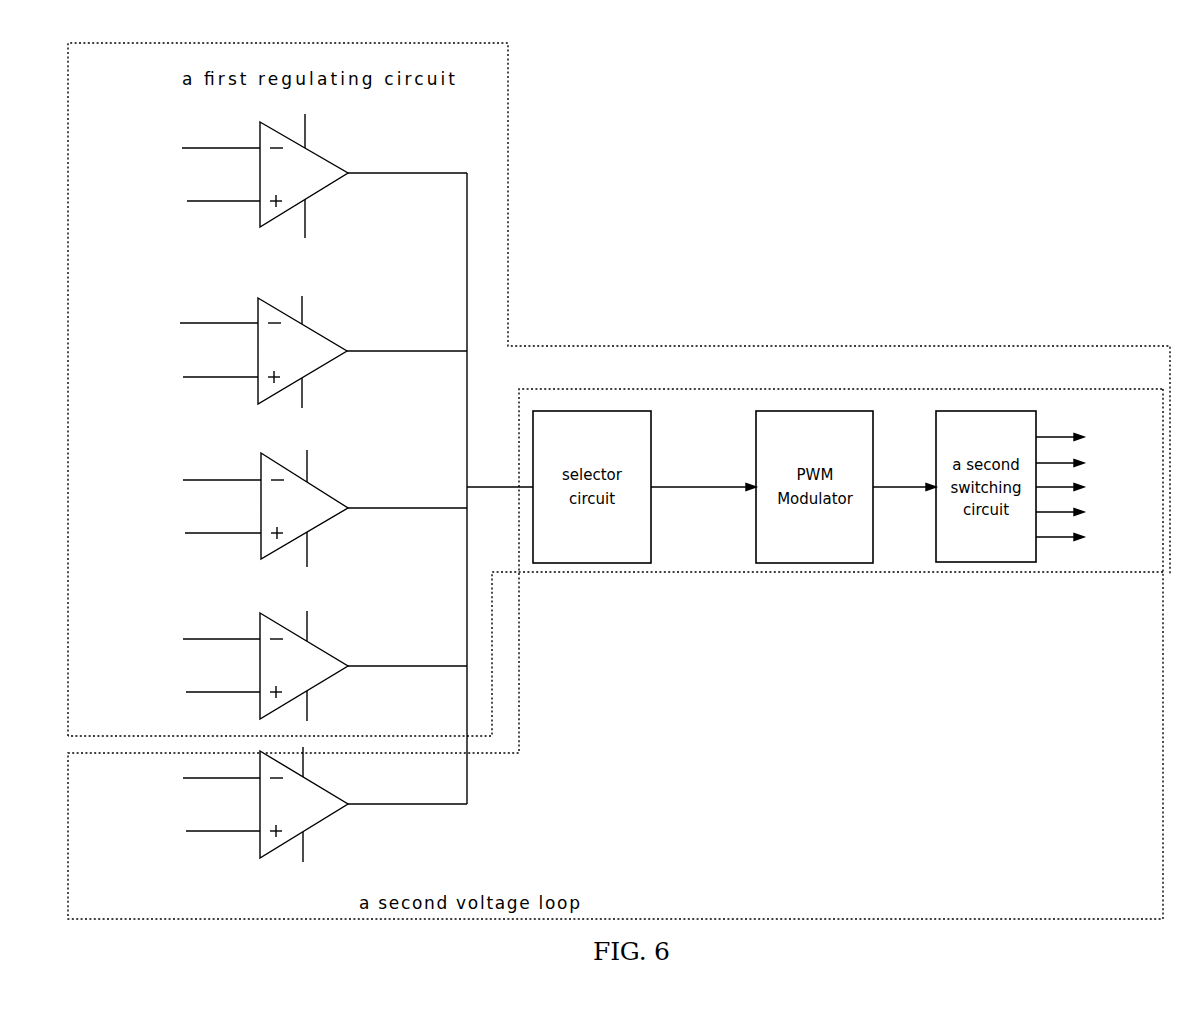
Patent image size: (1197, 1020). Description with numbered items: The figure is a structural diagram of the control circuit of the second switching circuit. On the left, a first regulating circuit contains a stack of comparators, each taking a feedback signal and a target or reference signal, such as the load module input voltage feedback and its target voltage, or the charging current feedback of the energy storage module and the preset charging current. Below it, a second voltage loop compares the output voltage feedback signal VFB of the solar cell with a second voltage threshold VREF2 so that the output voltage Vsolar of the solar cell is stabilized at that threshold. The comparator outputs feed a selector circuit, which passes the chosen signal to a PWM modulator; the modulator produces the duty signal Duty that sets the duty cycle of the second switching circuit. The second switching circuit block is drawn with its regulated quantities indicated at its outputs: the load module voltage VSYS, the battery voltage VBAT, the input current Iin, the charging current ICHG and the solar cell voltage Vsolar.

The duty signal Duty is at (904, 473).
The second voltage threshold VREF2 is at (181, 778).
The output voltage feedback signal of the solar cell VFB is at (188, 831).
The system voltage output VSYS is at (1091, 440).
The battery voltage output VBAT is at (1092, 466).
The input current output Iin is at (1089, 490).
The charging current output ICHG is at (1094, 515).
The output voltage of the solar cell Vsolar is at (1096, 536).